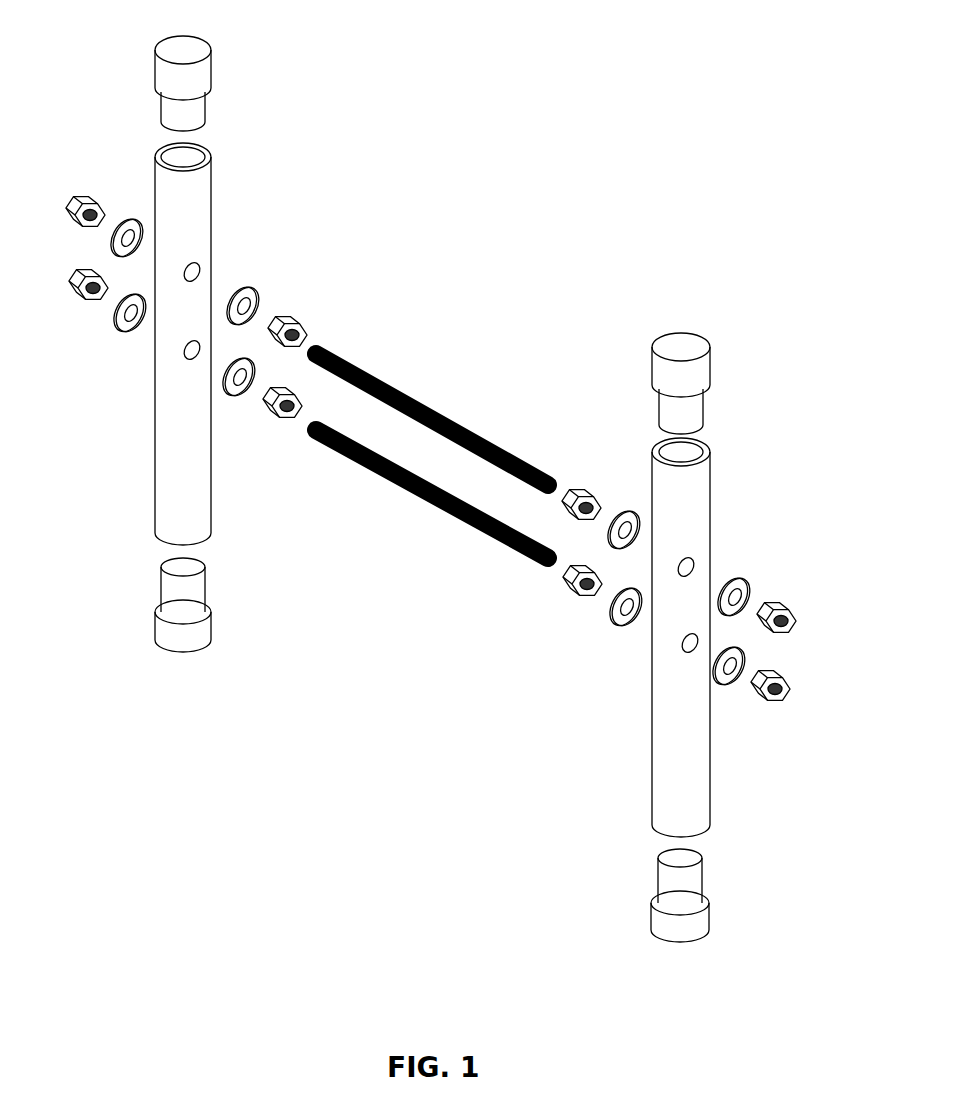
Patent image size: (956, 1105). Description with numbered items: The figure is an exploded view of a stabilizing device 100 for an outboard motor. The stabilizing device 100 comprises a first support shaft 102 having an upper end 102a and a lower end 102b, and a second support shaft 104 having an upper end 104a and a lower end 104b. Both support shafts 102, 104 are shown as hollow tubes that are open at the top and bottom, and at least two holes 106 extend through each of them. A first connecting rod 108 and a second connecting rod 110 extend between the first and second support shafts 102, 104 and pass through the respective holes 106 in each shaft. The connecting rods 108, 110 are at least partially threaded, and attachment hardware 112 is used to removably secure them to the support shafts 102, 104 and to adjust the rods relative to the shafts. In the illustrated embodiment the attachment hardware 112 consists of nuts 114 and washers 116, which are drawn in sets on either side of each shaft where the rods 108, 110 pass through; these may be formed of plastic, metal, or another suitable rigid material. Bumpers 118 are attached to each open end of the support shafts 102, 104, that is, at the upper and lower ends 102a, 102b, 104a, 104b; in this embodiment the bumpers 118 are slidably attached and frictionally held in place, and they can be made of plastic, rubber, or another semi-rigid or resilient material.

The stabilizing device 100 is at (540, 205).
The first support shaft 102 is at (160, 458).
The upper end of first support shaft 102a is at (238, 194).
The lower end of first support shaft 102b is at (130, 522).
The second support shaft 104 is at (655, 763).
The upper end of second support shaft 104a is at (730, 474).
The lower end of second support shaft 104b is at (605, 812).
The holes 106 is at (200, 268).
The first connecting rod 108 is at (482, 437).
The second connecting rod 110 is at (428, 503).
The attachment hardware 112 is at (108, 165).
The nuts 114 is at (86, 196).
The washers 116 is at (140, 221).
The bumpers 118 is at (210, 72).